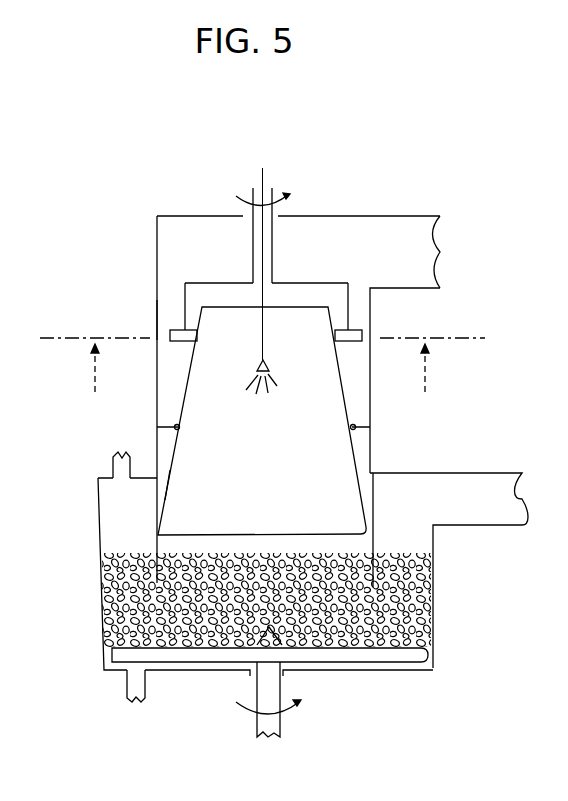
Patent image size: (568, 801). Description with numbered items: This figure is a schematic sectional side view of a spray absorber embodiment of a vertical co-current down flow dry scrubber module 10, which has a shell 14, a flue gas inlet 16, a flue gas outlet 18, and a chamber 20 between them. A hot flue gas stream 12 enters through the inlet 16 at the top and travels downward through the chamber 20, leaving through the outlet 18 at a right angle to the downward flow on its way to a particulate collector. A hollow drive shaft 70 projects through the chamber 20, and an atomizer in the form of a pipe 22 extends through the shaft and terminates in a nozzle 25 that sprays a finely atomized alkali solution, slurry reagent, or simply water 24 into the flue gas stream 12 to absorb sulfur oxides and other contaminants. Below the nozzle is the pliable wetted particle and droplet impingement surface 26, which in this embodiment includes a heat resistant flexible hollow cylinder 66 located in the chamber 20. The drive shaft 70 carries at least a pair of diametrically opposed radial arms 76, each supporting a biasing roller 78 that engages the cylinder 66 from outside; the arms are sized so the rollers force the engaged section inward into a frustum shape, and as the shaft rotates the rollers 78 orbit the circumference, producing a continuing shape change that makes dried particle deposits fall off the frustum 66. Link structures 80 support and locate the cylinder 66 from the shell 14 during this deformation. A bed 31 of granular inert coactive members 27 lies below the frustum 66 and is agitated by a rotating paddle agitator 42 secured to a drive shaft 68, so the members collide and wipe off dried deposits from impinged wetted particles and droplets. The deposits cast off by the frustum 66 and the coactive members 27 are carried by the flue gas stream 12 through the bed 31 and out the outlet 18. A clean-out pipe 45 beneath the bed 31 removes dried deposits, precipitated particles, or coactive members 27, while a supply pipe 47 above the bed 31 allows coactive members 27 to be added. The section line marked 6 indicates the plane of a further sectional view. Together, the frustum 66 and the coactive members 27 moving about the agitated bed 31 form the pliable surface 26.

The section line of FIG. 6 is at (262, 378).
The dry scrubber module 10 is at (141, 428).
The flue gas stream 12 is at (342, 250).
The shell 14 is at (153, 320).
The flue gas inlet 16 is at (400, 213).
The flue gas outlet 18 is at (498, 527).
The chamber 20 is at (364, 452).
The fluid atomizer 22 is at (265, 318).
The wetting liquid 24 is at (272, 376).
The nozzle 25 is at (255, 368).
The pliable wetted particle and droplet impingement surface 26 is at (124, 547).
The coactive members 27 is at (406, 578).
The bed 31 is at (98, 583).
The rotating paddle agitator 42 is at (108, 660).
The clean-out pipe 45 is at (151, 691).
The supply pipe 47 is at (111, 472).
The pliable hollow cylinder 66 is at (176, 458).
The drive shaft 68 is at (287, 730).
The hollow drive shaft 70 is at (276, 243).
The radial arms 76 is at (220, 278).
The biasing rollers 78 is at (363, 327).
The link structures 80 is at (362, 420).